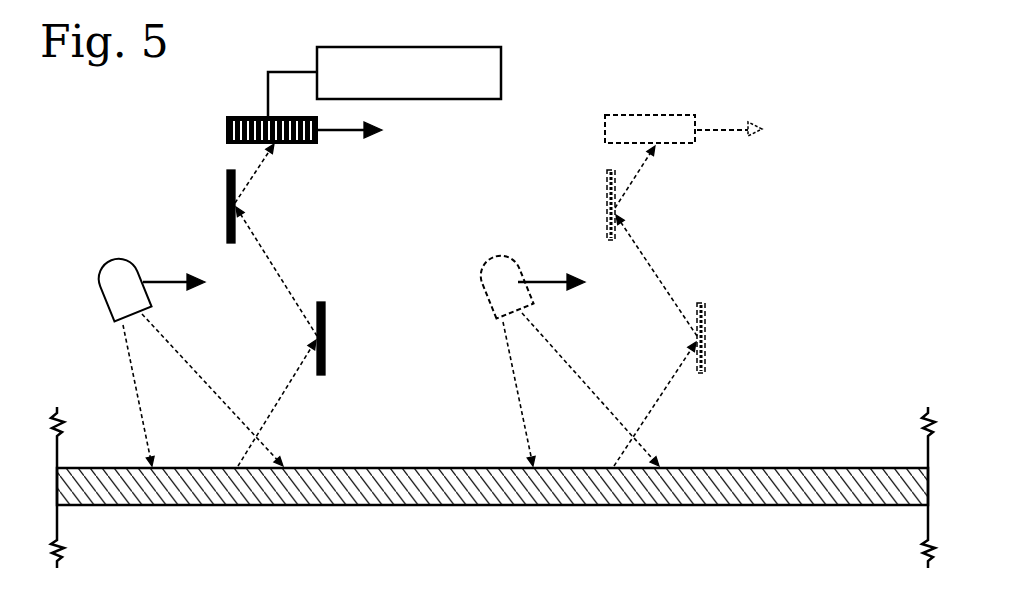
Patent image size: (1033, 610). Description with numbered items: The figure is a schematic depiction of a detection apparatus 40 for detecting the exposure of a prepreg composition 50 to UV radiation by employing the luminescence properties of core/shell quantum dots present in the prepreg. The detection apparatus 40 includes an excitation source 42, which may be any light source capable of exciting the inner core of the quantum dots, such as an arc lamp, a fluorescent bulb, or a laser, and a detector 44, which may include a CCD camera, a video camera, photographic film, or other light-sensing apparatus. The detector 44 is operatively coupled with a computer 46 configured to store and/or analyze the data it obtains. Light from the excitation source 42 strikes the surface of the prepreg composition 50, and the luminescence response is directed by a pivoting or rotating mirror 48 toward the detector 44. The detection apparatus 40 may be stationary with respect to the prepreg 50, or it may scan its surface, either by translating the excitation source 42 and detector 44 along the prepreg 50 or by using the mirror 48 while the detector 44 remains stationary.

The detection apparatus 40 is at (809, 83).
The excitation source 42 is at (117, 253).
The detector 44 is at (225, 132).
The computer 46 is at (505, 72).
The mirror 48 is at (227, 200).
The prepreg composition 50 is at (410, 505).